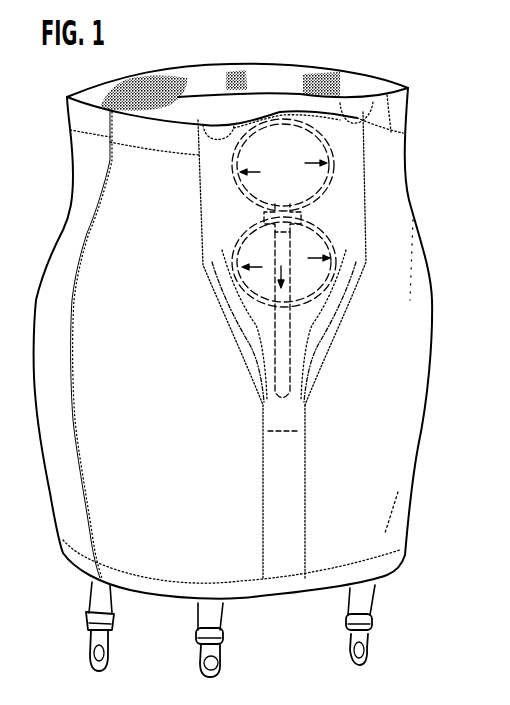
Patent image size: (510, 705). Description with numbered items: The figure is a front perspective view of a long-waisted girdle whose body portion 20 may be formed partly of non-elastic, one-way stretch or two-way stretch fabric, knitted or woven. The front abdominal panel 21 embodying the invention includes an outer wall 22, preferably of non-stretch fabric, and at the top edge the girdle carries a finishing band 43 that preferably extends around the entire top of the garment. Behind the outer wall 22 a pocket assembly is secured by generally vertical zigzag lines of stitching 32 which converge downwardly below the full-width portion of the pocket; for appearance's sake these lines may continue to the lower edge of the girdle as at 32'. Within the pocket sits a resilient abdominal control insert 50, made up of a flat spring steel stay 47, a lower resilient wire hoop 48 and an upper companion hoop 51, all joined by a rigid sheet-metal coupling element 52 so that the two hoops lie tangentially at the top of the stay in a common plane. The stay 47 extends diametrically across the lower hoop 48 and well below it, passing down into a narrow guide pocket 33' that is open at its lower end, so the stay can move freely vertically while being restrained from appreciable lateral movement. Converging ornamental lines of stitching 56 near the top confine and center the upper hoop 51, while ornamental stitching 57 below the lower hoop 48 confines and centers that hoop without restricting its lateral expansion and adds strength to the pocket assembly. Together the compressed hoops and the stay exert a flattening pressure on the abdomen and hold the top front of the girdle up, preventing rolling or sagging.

The body portion 20 is at (418, 307).
The front abdominal panel 21 is at (345, 207).
The outer wall 22 is at (222, 220).
The zigzag lines of stitching 32 is at (236, 344).
The lines of stitching 32' is at (262, 492).
The narrow guide pocket 33' is at (284, 332).
The finishing band 43 is at (275, 78).
The stay 47 is at (275, 348).
The lower resilient wire hoop 48 is at (232, 245).
The resilient abdominal control insert 50 is at (343, 165).
The upper companion hoop 51 is at (236, 170).
The rigid coupling element 52 is at (283, 204).
The ornamental lines of stitching 56 is at (217, 136).
The ornamental stitching 57 is at (253, 316).